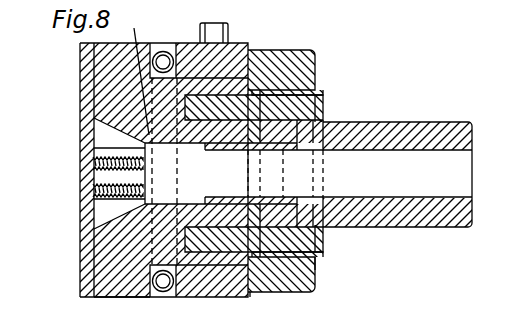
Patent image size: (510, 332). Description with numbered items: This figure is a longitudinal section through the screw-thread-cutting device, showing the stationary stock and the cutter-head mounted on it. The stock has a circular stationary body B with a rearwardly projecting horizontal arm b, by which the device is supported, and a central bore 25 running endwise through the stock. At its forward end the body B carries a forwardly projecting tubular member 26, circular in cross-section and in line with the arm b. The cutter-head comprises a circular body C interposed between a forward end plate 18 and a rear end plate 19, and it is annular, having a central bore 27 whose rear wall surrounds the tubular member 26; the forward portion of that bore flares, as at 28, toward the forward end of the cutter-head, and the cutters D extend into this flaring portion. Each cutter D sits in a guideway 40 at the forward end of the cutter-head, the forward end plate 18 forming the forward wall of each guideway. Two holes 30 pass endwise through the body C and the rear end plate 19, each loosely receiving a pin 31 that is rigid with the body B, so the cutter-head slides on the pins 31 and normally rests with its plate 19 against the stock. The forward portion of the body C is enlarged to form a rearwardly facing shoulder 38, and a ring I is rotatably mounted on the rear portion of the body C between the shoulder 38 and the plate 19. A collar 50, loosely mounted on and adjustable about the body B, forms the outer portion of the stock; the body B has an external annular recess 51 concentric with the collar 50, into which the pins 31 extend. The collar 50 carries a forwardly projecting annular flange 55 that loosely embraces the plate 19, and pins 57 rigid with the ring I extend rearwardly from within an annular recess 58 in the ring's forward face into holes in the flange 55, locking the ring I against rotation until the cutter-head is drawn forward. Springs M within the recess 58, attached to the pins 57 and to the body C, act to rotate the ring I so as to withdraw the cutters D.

The forward end plate 18 is at (80, 60).
The flaring forward end-portion of the bore 28 is at (94, 118).
The central bore 27 is at (136, 72).
The cutter D is at (96, 163).
The annular recess 58 is at (160, 50).
The rearwardly facing annular shoulder 38 is at (160, 51).
The spring M is at (177, 44).
The pin 57 is at (200, 24).
The guideway 40 is at (228, 40).
The hole 30 is at (220, 87).
The annular flange 55 is at (262, 52).
The collar 50 is at (313, 55).
The annular recess 51 is at (315, 73).
The body of the stock B is at (318, 92).
The pin 31 is at (322, 108).
The tubular member 26 is at (308, 173).
The arm b is at (457, 121).
The bore 25 is at (398, 198).
The rear end plate 19 is at (317, 272).
The ring I is at (240, 297).
The body of the cutter-head C is at (111, 286).